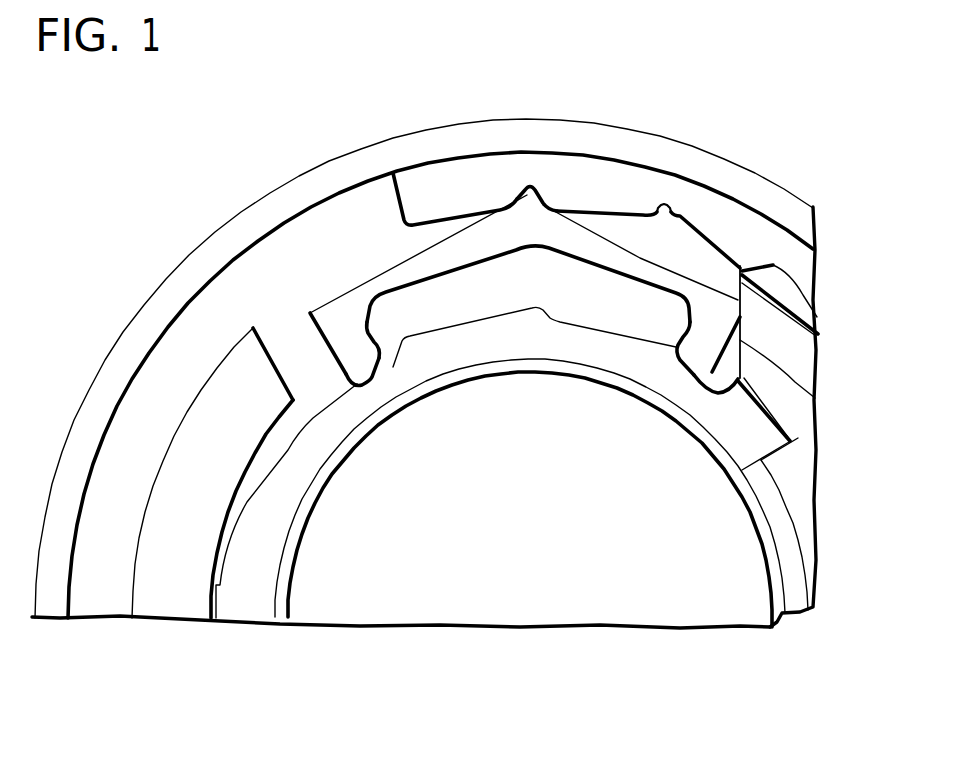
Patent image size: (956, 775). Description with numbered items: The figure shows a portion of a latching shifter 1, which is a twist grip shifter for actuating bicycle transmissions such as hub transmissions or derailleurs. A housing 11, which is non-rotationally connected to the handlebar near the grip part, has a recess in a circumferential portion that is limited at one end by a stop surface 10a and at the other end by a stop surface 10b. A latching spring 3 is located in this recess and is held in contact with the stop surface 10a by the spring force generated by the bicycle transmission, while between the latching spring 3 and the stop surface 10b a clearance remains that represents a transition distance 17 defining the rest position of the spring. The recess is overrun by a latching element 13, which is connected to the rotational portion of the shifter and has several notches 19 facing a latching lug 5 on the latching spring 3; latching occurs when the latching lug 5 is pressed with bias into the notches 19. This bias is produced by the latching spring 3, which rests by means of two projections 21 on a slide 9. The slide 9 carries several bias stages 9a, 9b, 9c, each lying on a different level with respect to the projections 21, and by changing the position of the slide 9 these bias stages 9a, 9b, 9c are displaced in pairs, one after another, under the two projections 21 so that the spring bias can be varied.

The latching shifter 1 is at (743, 146).
The latching spring 3 is at (596, 248).
The latching lug 5 is at (530, 198).
The slide 9 is at (556, 345).
The bias stage 9a is at (378, 380).
The bias stage 9b is at (297, 447).
The bias stage 9c is at (236, 537).
The stop surface 10a is at (267, 373).
The stop surface 10b is at (815, 396).
The housing 11 is at (273, 605).
The latching element 13 is at (437, 178).
The transition distance 17 is at (300, 357).
The notches 19 is at (675, 213).
The projections 21 is at (358, 362).